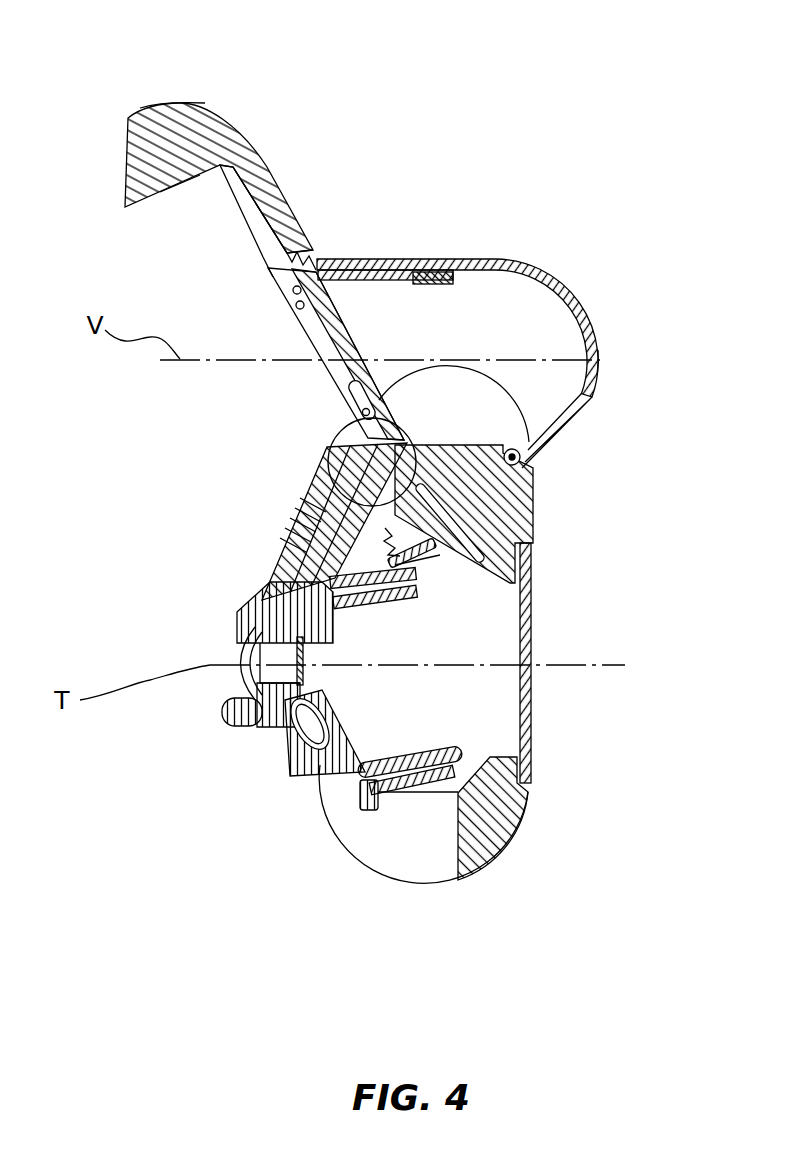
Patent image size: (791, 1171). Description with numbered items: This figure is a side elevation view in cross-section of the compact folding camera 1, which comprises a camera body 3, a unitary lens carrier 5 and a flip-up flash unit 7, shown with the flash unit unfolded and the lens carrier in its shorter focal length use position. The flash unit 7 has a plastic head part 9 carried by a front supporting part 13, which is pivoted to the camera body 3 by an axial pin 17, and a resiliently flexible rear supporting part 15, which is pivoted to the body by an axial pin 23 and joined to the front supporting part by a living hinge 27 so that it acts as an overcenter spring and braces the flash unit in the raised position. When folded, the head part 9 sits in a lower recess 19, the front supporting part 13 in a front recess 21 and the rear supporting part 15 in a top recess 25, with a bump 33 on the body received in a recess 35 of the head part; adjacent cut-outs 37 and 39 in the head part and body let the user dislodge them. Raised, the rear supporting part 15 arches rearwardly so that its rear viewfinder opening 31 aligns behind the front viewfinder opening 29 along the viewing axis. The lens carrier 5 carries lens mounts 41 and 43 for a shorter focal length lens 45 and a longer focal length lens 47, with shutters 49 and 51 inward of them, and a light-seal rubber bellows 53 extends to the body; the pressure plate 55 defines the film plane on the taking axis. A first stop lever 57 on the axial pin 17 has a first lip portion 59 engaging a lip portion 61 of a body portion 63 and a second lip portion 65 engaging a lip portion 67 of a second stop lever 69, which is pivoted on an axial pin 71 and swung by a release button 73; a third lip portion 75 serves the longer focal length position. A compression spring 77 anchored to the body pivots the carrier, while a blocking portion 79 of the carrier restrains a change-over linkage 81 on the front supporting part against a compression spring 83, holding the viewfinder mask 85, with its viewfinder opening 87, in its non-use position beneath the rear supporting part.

The compact folding 35mm camera 1 is at (375, 485).
The camera body 3 is at (488, 563).
The lens carrier 5 is at (267, 707).
The flash unit 7 is at (301, 207).
The head part 9 is at (198, 102).
The front supporting part 13 is at (243, 223).
The rear supporting part 15 is at (513, 259).
The axial pin 17 is at (330, 441).
The lower recess 19 is at (453, 837).
The front recess 21 is at (300, 690).
The axial pin 23 is at (534, 482).
The top recess 25 is at (514, 449).
The living hinge 27 is at (317, 259).
The front viewfinder opening 29 is at (348, 402).
The rear viewfinder opening 31 is at (597, 352).
The bump 33 is at (377, 810).
The recess 35 is at (195, 180).
The cut-out 37 is at (128, 118).
The cut-out 39 is at (467, 876).
The lens mount 41 is at (236, 632).
The lens mount 43 is at (310, 792).
The shorter focal length lens 45 is at (235, 690).
The longer focal length lens 47 is at (298, 745).
The shutter 49 is at (304, 657).
The shutter 51 is at (345, 707).
The light-seal rubber bellows 53 is at (430, 755).
The pressure plate 55 is at (532, 622).
The first stop lever 57 is at (340, 472).
The first lip portion 59 is at (412, 592).
The lip portion 61 is at (400, 548).
The body portion 63 is at (430, 562).
The second lip portion 65 is at (385, 612).
The lip portion 67 is at (415, 602).
The second stop lever 69 is at (275, 540).
The axial pin 71 is at (270, 575).
The release button 73 is at (292, 512).
The third lip portion 75 is at (248, 610).
The compression spring 77 is at (440, 520).
The blocking portion 79 is at (420, 442).
The change-over linkage 81 is at (318, 323).
The compression spring 83 is at (293, 291).
The viewfinder mask 85 is at (445, 285).
The viewfinder opening 87 is at (395, 281).